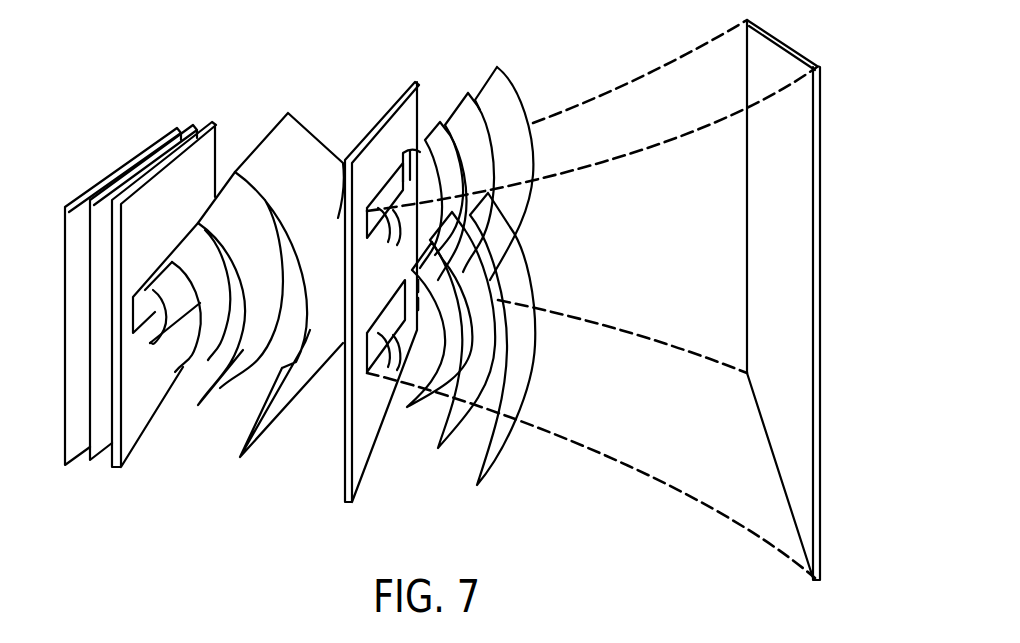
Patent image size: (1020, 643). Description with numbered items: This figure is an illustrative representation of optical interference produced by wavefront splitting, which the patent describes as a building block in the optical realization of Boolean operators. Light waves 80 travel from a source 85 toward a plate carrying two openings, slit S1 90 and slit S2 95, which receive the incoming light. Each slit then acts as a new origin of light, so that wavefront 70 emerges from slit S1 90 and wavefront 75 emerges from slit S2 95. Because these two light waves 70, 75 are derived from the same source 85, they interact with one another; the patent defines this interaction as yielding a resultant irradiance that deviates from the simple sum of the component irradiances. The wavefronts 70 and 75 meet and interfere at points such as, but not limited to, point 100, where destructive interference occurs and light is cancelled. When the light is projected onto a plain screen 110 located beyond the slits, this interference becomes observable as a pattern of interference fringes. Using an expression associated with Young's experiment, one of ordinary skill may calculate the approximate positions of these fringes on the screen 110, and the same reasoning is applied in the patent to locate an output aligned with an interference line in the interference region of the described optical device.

The light wave 70 is at (527, 80).
The light wave 75 is at (504, 478).
The light waves 80 is at (312, 148).
The source 85 is at (137, 383).
The slit S1 90 is at (350, 292).
The slit S2 95 is at (380, 175).
The point 100 is at (502, 258).
The screen 110 is at (802, 245).
The slit S1 is at (373, 399).
The slit S2 is at (373, 266).